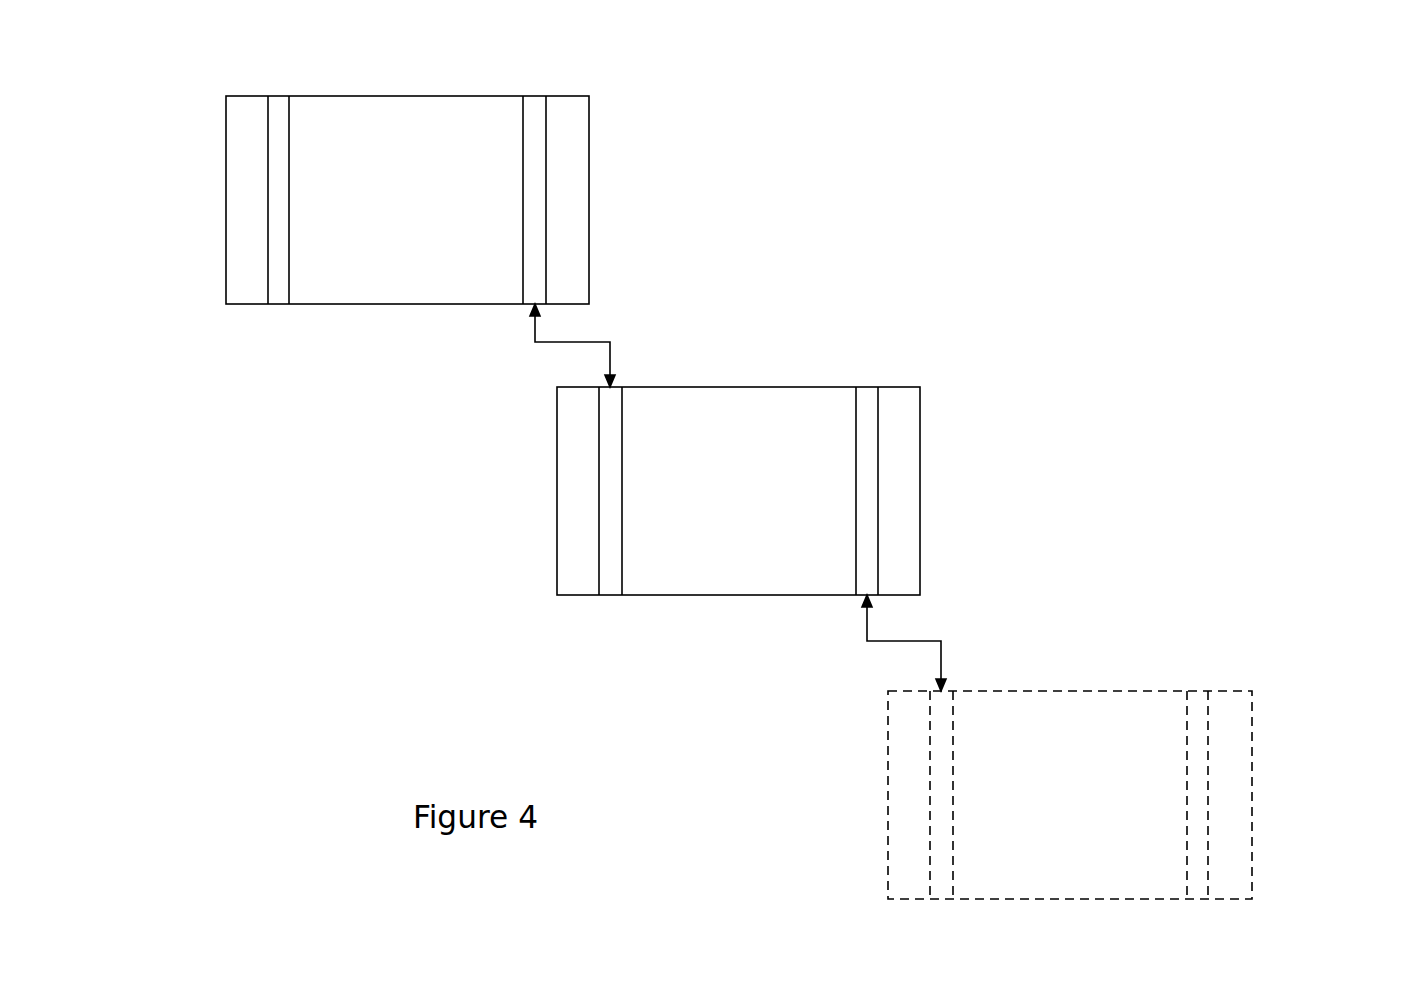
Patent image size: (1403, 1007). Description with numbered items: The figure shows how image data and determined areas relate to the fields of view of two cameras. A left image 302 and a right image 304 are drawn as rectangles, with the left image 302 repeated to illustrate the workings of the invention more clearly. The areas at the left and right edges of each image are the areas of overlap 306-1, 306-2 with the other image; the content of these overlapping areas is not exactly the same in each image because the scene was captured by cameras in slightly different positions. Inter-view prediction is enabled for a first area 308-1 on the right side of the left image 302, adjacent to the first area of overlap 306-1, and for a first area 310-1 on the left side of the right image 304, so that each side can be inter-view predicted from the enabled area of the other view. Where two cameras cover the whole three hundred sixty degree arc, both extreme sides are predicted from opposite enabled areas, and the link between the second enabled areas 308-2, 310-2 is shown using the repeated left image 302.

The left image 302 is at (412, 276).
The right image 304 is at (755, 415).
The first area of overlap 306-1 is at (570, 207).
The second area of overlap 306-2 is at (243, 197).
The first area of the left image 308-1 is at (535, 125).
The second enabled area of the left image 308-2 is at (282, 289).
The first area of the right image 310-1 is at (613, 580).
The second enabled area of the right image 310-2 is at (866, 400).